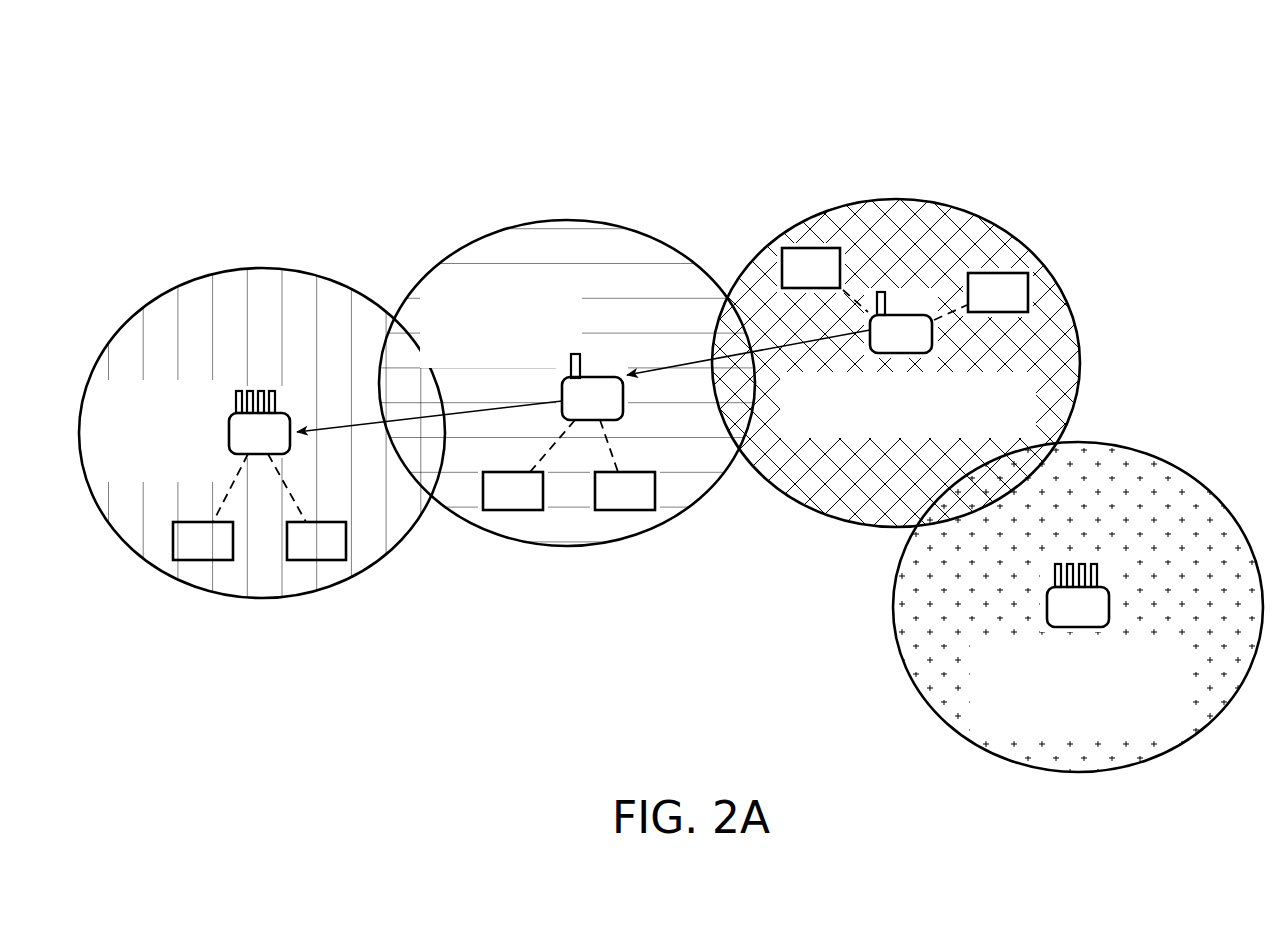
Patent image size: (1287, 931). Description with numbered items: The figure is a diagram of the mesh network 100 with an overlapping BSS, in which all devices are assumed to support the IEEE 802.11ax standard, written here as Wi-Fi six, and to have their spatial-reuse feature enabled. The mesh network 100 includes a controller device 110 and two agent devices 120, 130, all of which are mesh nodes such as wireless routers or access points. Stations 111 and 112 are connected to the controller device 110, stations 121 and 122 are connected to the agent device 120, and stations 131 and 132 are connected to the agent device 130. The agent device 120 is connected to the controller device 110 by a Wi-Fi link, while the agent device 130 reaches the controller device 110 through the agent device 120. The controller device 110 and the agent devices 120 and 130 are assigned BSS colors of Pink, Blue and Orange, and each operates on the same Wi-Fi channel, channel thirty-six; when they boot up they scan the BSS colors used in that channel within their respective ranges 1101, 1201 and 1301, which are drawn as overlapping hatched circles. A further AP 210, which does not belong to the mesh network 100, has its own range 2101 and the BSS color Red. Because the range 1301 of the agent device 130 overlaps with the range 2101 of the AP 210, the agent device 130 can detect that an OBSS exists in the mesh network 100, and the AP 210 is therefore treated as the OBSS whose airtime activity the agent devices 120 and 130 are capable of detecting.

The mesh network 100 is at (242, 110).
The range of the controller device 1101 is at (178, 286).
The controller device 110 is at (300, 410).
The station 111 is at (198, 562).
The station 112 is at (303, 562).
The range of the agent device 1201 is at (457, 251).
The agent device 120 is at (626, 409).
The station 121 is at (513, 512).
The station 122 is at (627, 512).
The range of the agent device 1301 is at (1080, 352).
The agent device 130 is at (912, 315).
The station 131 is at (808, 248).
The station 132 is at (987, 273).
The range of the AP 2101 is at (1190, 478).
The AP 210 is at (1047, 611).